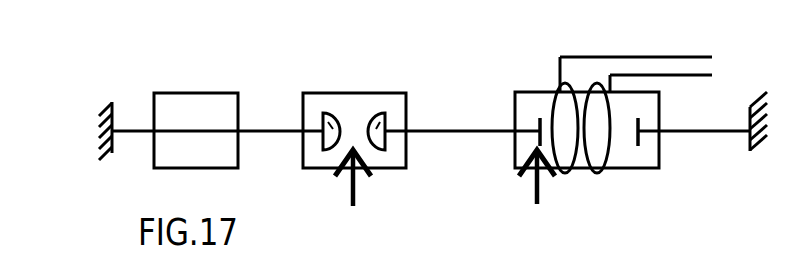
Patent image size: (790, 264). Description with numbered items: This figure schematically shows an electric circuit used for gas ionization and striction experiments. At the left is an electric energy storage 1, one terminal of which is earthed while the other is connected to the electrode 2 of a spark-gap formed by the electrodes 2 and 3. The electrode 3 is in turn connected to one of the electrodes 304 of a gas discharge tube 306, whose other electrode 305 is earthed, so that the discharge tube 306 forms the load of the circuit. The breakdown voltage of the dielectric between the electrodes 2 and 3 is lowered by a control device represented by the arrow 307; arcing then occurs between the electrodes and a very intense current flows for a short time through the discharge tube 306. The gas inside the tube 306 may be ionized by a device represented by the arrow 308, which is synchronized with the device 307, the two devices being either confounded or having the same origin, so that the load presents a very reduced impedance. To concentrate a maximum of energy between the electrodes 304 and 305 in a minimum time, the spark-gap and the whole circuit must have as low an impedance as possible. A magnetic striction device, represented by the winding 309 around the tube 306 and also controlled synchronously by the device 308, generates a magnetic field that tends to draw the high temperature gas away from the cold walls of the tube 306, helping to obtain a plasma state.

The electric energy storage 1 is at (188, 106).
The electrode 2 is at (320, 113).
The electrode 3 is at (375, 113).
The electrode 304 is at (535, 130).
The electrode 305 is at (640, 120).
The gas discharge tube 306 is at (543, 92).
The control device 307 is at (350, 197).
The ionizing device 308 is at (530, 193).
The winding 309 is at (658, 57).